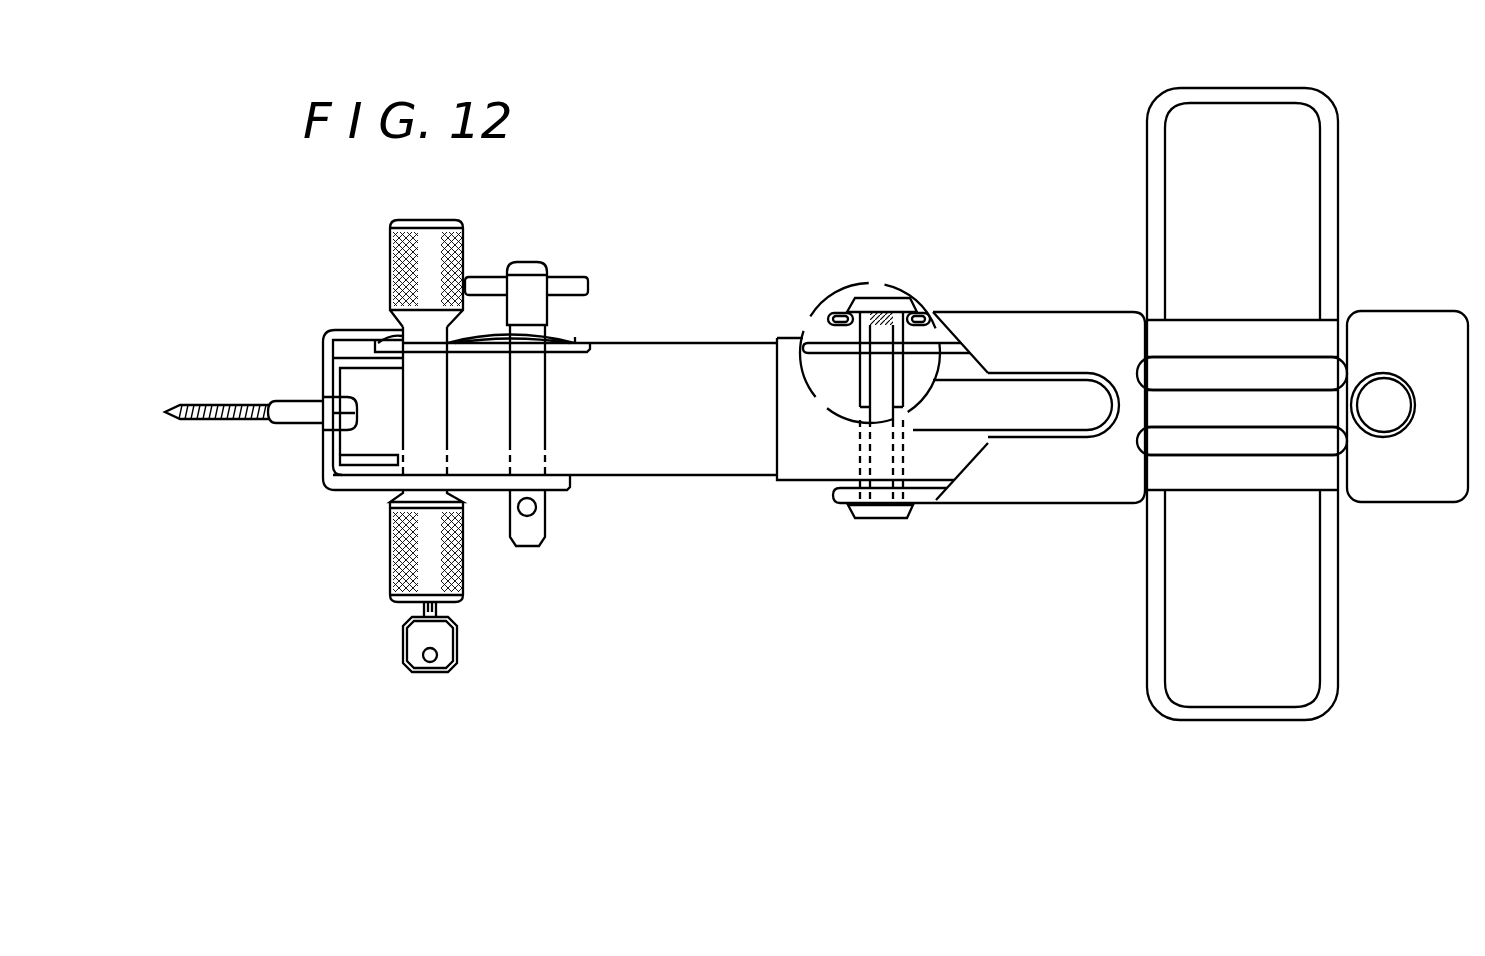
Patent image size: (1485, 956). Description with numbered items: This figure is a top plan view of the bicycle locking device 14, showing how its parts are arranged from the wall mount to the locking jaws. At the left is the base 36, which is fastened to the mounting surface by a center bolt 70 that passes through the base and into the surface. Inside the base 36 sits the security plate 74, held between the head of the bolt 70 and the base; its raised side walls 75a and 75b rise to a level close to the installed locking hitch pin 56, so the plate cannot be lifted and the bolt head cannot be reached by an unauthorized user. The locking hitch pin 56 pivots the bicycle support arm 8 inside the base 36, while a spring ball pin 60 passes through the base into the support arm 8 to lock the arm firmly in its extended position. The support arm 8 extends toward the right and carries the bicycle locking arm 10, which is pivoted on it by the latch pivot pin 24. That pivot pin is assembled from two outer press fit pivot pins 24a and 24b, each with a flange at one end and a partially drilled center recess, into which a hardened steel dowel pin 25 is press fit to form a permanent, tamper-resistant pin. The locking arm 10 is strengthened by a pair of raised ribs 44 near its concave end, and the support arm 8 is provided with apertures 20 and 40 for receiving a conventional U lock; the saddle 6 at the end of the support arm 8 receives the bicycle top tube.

The saddle 6 is at (1283, 693).
The bicycle support arm 8 is at (741, 458).
The bicycle locking arm 10 is at (1032, 328).
The bicycle locking device 14 is at (678, 343).
The aperture 20 is at (1060, 427).
The latch pivot pin 24 is at (880, 518).
The outer press fit pivot pin 24a is at (917, 333).
The outer press fit pivot pin 24b is at (883, 457).
The hardened steel dowel pin 25 is at (880, 363).
The base 36 is at (318, 484).
The aperture 40 is at (1383, 422).
The strengthening ribs 44 is at (1263, 390).
The locking hitch pin 56 is at (462, 587).
The spring ball pin 60 is at (532, 540).
The center bolt 70 is at (210, 420).
The security plate 74 is at (342, 462).
The raised side wall 75a is at (349, 361).
The raised side wall 75b is at (367, 465).